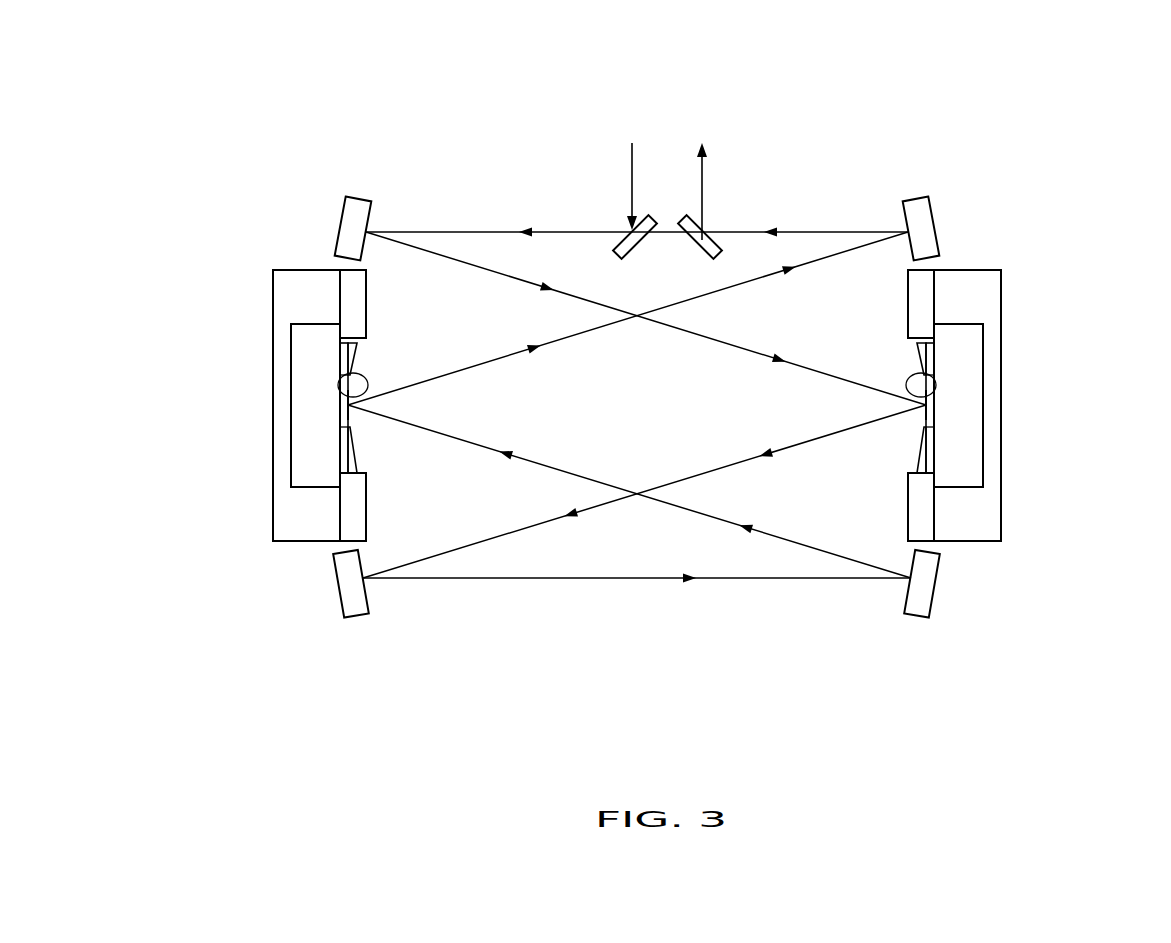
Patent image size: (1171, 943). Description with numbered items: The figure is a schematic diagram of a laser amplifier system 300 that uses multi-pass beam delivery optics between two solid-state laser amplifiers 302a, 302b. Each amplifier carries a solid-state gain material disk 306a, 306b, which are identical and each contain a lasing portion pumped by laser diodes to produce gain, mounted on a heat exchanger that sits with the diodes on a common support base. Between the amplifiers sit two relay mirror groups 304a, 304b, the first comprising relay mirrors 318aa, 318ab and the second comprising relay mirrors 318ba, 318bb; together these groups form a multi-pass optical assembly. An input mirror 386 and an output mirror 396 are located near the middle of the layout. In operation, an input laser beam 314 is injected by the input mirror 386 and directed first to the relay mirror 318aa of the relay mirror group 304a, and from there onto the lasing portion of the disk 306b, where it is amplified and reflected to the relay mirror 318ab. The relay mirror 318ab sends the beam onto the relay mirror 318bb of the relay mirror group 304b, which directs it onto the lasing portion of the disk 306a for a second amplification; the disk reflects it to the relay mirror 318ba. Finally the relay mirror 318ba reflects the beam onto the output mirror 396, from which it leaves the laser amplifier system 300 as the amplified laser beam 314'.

The laser amplifier system 300 is at (742, 84).
The solid-state laser amplifier 302a is at (253, 352).
The solid-state laser amplifier 302b is at (1020, 356).
The relay mirror group 304a is at (313, 634).
The relay mirror group 304b is at (924, 621).
The solid-state gain material disk 306a is at (250, 418).
The solid-state gain material disk 306b is at (1026, 422).
The input laser beam 314 is at (576, 186).
The amplified laser beam 314' is at (758, 191).
The relay mirror 318aa is at (370, 204).
The relay mirror 318ab is at (368, 593).
The relay mirror 318ba is at (905, 204).
The relay mirror 318bb is at (907, 590).
The input mirror 386 is at (622, 240).
The output mirror 396 is at (708, 240).